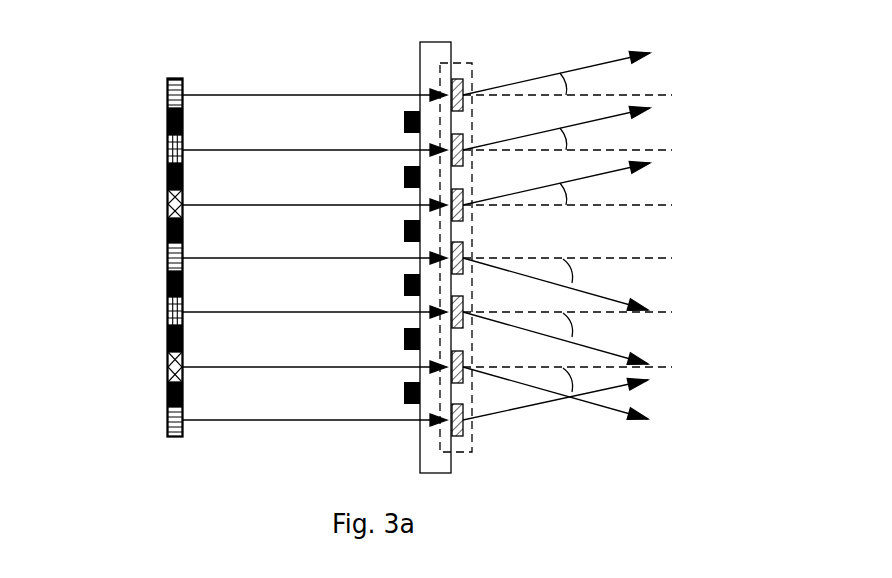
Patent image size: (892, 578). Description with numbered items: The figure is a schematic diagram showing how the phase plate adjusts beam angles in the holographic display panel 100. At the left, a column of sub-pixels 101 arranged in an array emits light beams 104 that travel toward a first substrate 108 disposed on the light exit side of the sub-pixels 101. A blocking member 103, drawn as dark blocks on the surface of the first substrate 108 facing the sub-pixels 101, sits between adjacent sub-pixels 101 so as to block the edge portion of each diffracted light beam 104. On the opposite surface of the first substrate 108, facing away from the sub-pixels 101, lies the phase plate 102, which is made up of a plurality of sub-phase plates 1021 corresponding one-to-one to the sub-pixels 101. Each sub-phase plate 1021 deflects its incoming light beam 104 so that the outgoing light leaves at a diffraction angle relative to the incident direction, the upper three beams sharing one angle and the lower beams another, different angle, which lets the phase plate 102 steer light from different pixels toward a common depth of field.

The holographic display panel 100 is at (110, 58).
The sub-pixels 101 is at (168, 203).
The phase plate 102 is at (477, 79).
The sub-phase plates 1021 is at (464, 212).
The blocking member 103 is at (404, 117).
The light beam 104 is at (286, 206).
The first substrate 108 is at (418, 437).